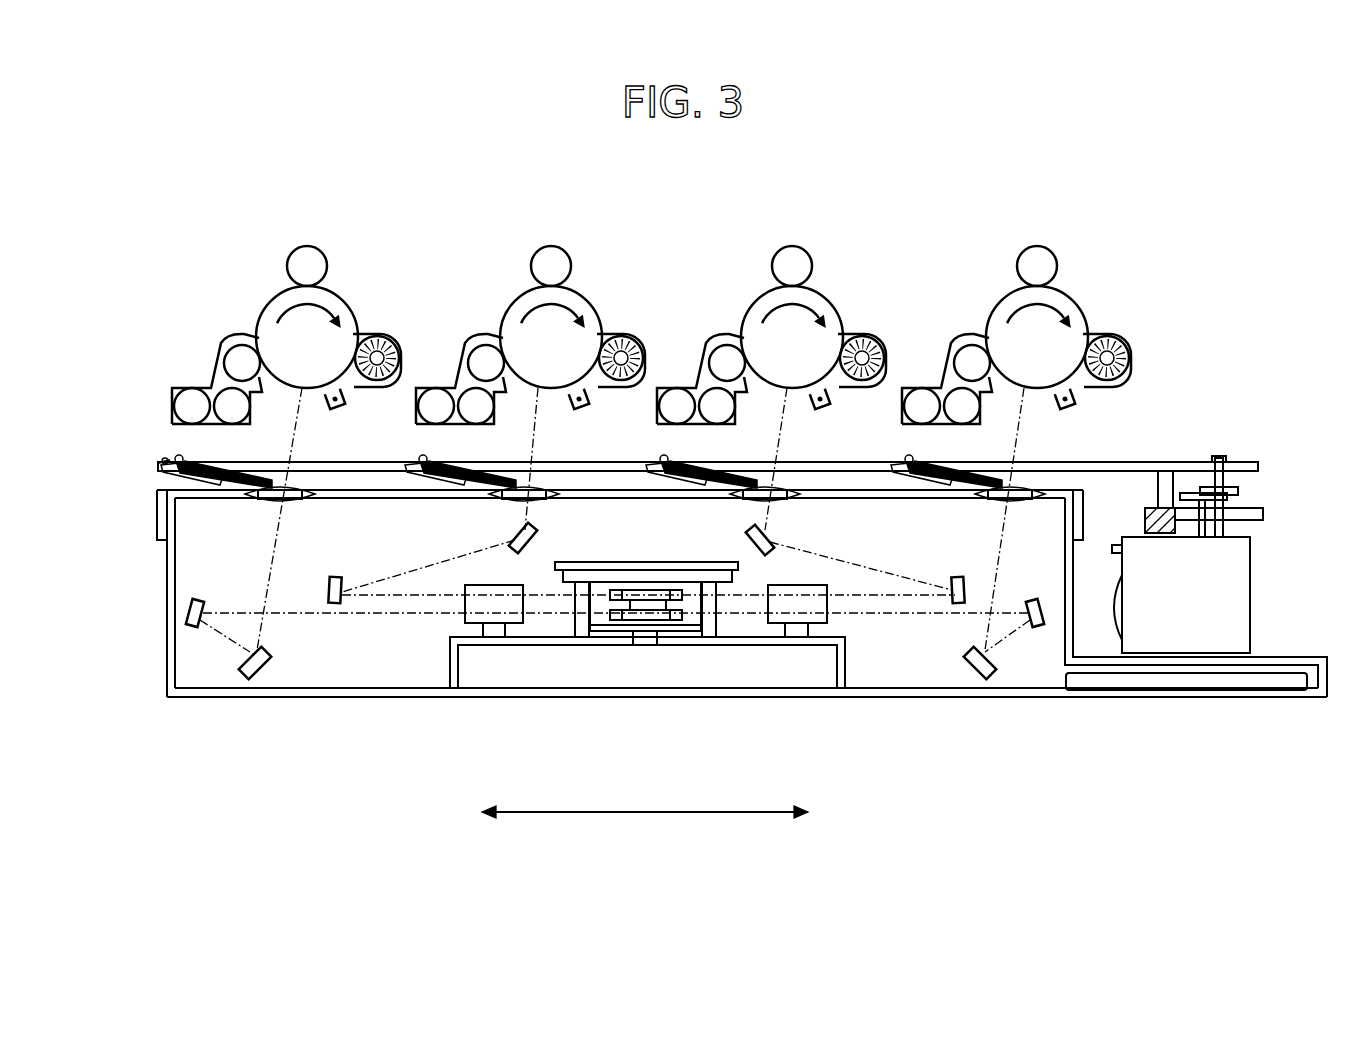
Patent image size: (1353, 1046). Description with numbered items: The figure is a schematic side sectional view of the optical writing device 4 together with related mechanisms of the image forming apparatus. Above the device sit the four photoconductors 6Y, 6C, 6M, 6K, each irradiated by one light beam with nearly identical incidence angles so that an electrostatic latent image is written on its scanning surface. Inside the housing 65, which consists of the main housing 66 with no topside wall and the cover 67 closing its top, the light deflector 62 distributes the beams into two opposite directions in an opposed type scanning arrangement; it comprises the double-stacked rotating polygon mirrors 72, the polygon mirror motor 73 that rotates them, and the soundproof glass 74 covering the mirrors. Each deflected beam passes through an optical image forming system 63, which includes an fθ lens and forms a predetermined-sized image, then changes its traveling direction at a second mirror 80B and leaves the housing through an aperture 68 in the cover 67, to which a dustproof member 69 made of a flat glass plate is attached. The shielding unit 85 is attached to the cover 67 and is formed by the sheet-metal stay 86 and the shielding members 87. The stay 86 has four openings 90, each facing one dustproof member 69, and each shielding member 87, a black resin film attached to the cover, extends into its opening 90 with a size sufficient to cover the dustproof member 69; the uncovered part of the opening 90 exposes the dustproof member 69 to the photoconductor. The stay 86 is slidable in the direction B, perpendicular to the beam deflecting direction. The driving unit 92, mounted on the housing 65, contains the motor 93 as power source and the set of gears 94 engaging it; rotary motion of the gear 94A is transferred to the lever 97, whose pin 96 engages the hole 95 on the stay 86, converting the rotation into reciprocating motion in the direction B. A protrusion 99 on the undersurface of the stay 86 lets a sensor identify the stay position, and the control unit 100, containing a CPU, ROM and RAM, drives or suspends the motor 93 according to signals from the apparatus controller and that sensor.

The optical writing device 4 is at (1280, 291).
The photoconductor 6Y is at (273, 302).
The photoconductor 6C is at (517, 302).
The photoconductor 6M is at (758, 302).
The photoconductor 6K is at (1003, 302).
The light deflector 62 is at (647, 562).
The optical image forming system 63 is at (465, 620).
The housing 65 is at (929, 703).
The main housing 66 is at (883, 702).
The cover 67 is at (160, 522).
The aperture 68 is at (286, 500).
The dustproof member 69 is at (298, 490).
The rotating polygon mirror 72 is at (640, 632).
The polygon mirror motor 73 is at (646, 646).
The soundproof glass 74 is at (572, 600).
The second mirror 80B is at (260, 670).
The shielding unit 85 is at (152, 455).
The stay 86 is at (168, 460).
The shielding member 87 is at (230, 485).
The opening 90 is at (652, 464).
The driving unit 92 is at (1247, 595).
The motor 93 is at (1112, 620).
The set of gears 94 is at (1262, 499).
The gear 94A is at (1265, 514).
The hole 95 is at (1228, 470).
The pin 96 is at (1218, 458).
The lever 97 is at (1240, 490).
The protrusion 99 is at (1165, 471).
The control unit 100 is at (1268, 683).
The direction B is at (645, 798).